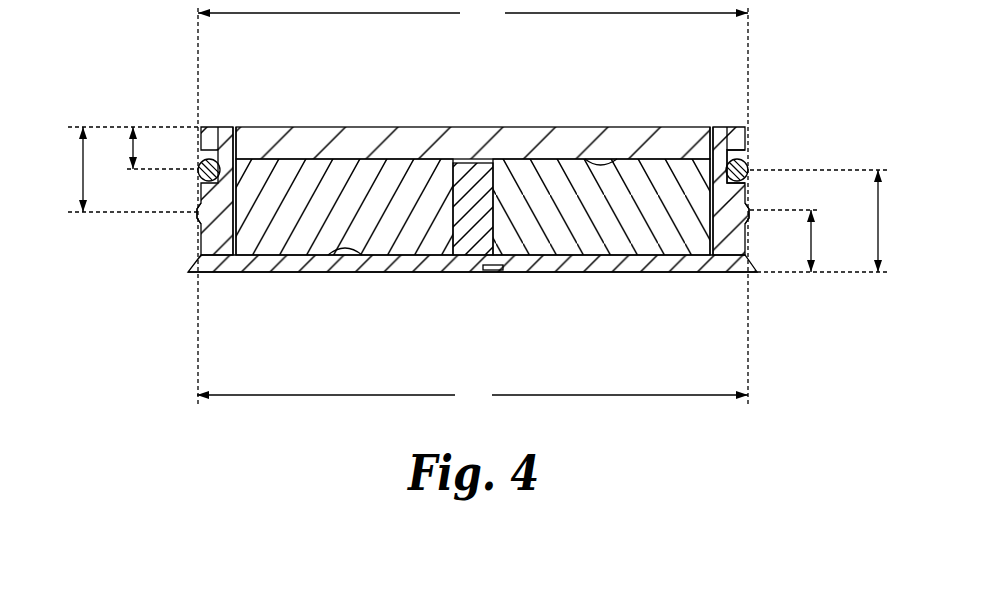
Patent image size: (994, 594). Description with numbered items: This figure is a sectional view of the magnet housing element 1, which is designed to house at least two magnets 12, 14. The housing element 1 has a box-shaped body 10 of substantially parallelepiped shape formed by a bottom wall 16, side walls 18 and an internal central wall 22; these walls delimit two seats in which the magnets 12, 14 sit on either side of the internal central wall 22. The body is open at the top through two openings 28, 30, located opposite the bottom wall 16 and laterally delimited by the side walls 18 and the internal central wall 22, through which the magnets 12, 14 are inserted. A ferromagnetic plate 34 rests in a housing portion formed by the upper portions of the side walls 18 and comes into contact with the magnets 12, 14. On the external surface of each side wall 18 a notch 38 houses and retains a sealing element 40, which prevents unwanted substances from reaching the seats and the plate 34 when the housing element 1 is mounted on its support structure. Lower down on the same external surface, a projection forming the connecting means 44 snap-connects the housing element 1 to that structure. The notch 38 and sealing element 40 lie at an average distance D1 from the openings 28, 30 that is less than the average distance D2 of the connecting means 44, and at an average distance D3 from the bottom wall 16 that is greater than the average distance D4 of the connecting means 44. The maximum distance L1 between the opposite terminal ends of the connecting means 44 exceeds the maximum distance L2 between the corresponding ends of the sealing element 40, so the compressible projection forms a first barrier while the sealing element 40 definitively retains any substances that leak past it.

The housing element 1 is at (471, 189).
The box-shaped body 10 is at (629, 274).
The magnet 12 is at (252, 227).
The magnet 14 is at (560, 227).
The bottom wall 16 is at (379, 270).
The side wall 18 is at (202, 242).
The internal central wall 22 is at (468, 233).
The opening 28 is at (712, 127).
The opening 30 is at (234, 127).
The plate 34 is at (411, 143).
The notch 38 is at (746, 153).
The sealing element 40 is at (747, 181).
The connecting means 44 is at (197, 215).
The maximum distance between opposite terminal ends of the projection L1 is at (472, 393).
The maximum distance between opposite terminal ends of the sealing element L2 is at (473, 202).
The average distance of the notch and sealing element from the openings D1 is at (133, 151).
The average distance of the projection from the openings D2 is at (83, 170).
The average distance of the notch and sealing element from the bottom wall D3 is at (880, 222).
The average distance of the projection from the bottom wall D4 is at (815, 242).